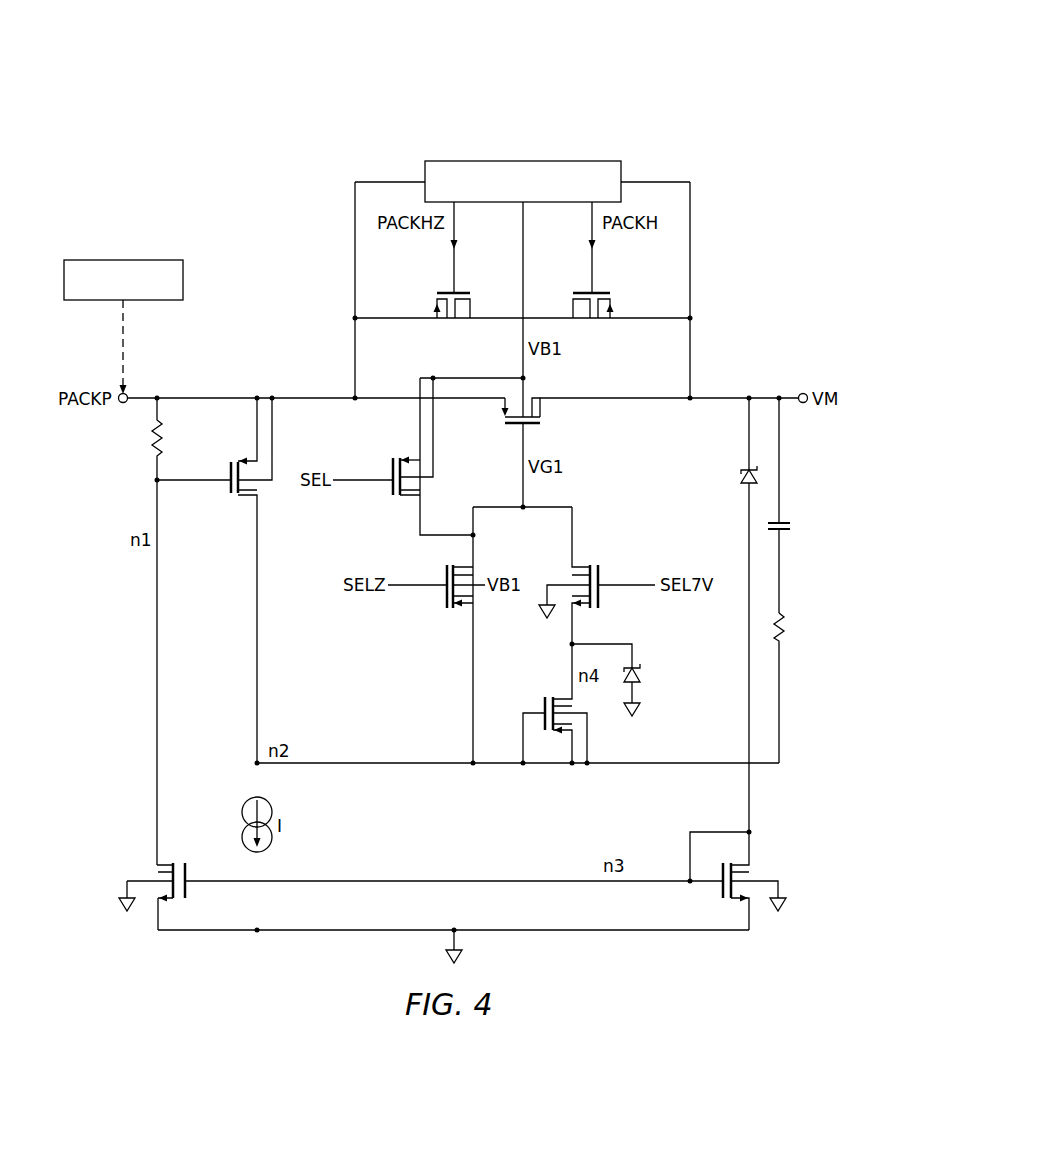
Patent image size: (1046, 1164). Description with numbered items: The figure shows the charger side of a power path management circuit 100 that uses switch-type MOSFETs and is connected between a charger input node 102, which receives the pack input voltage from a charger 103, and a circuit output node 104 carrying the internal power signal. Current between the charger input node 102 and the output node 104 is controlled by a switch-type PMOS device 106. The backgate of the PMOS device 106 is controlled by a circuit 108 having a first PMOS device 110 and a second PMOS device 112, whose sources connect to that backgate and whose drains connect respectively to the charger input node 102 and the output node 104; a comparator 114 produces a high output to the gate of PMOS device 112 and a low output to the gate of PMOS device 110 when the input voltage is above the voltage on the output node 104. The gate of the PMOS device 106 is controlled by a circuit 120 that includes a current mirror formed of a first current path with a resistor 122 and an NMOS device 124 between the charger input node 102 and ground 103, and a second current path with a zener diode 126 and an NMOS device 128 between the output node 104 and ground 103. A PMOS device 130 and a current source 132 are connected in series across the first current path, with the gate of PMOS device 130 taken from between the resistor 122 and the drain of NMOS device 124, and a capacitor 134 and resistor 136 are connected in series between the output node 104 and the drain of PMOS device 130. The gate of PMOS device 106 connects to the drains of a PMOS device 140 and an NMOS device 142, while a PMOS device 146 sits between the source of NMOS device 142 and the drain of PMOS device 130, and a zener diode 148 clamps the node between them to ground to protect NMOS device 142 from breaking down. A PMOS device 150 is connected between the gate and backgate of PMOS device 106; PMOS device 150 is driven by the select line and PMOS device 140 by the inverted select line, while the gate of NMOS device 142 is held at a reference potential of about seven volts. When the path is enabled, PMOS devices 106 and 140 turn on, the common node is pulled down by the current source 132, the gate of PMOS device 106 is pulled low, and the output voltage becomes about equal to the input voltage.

The power path management circuit 100 is at (672, 62).
The charger input node 102 is at (121, 406).
The charger 103 is at (118, 258).
The circuit output node 104 is at (805, 392).
The PMOS device 106 is at (514, 428).
The circuit 108 is at (716, 241).
The first PMOS device 110 is at (462, 292).
The second PMOS device 112 is at (580, 291).
The comparator 114 is at (536, 160).
The circuit 120 is at (778, 346).
The resistor 122 is at (170, 445).
The NMOS device 124 is at (190, 887).
The zener diode 126 is at (742, 474).
The NMOS device 128 is at (719, 887).
The PMOS device 130 is at (227, 484).
The current source 132 is at (241, 816).
The capacitor 134 is at (793, 527).
The resistor 136 is at (785, 628).
The PMOS device 140 is at (443, 597).
The NMOS device 142 is at (604, 577).
The PMOS device 146 is at (540, 704).
The zener diode 148 is at (641, 673).
The PMOS device 150 is at (390, 468).